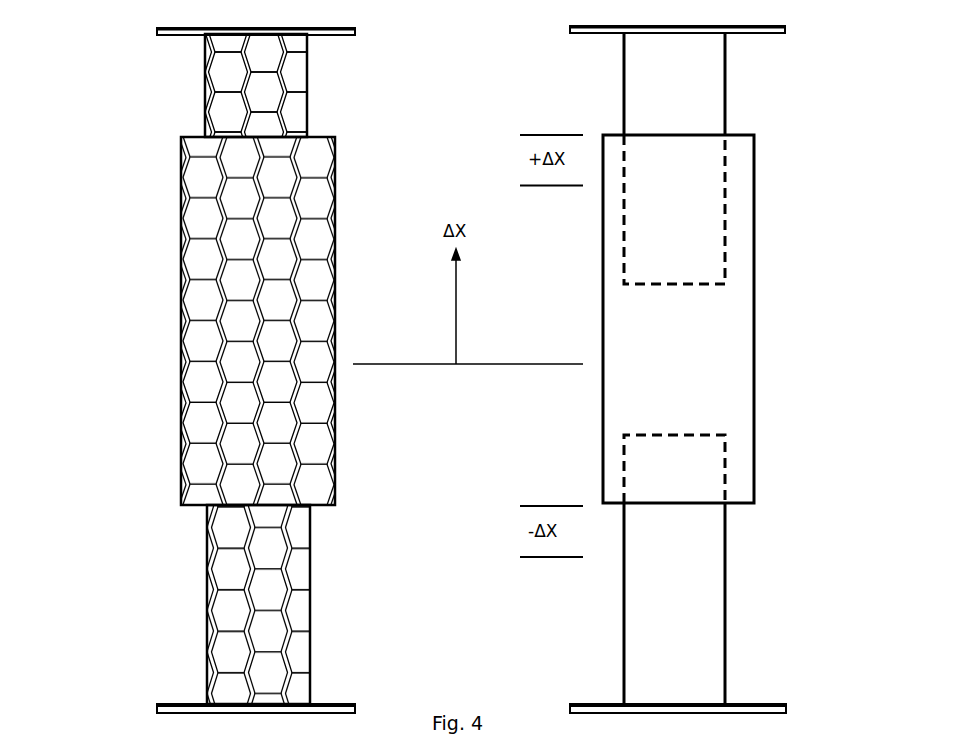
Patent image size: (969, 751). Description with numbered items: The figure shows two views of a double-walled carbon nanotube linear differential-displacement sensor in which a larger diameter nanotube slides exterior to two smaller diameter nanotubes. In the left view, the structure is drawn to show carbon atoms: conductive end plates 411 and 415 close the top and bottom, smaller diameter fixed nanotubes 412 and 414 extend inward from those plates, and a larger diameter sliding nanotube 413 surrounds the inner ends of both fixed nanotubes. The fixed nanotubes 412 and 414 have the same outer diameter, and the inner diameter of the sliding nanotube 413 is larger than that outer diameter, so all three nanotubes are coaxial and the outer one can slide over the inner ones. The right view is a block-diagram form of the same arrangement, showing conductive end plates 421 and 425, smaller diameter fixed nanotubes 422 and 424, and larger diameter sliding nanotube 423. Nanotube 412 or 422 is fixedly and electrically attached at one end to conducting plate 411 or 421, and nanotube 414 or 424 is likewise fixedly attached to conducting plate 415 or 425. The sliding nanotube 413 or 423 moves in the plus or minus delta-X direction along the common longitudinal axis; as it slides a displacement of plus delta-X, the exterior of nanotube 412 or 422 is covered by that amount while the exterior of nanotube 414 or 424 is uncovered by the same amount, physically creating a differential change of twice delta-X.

The conductive end plate 411 is at (158, 34).
The smaller diameter fixed nanotube 412 is at (205, 98).
The larger diameter sliding nanotube 413 is at (182, 322).
The smaller diameter fixed nanotube 414 is at (208, 520).
The conductive end plate 415 is at (155, 704).
The conductive end plate 421 is at (785, 33).
The smaller diameter fixed nanotube 422 is at (726, 85).
The larger diameter sliding nanotube 423 is at (725, 349).
The smaller diameter fixed nanotube 424 is at (726, 603).
The conductive end plate 425 is at (787, 706).